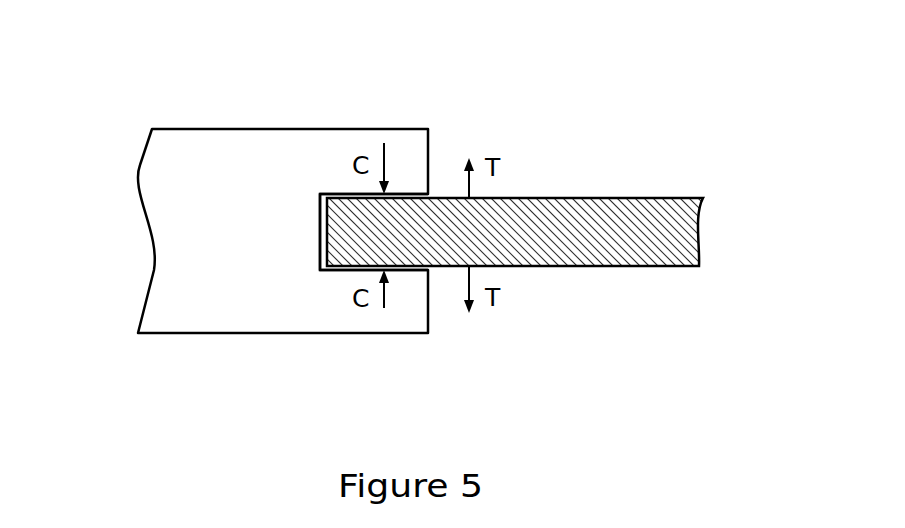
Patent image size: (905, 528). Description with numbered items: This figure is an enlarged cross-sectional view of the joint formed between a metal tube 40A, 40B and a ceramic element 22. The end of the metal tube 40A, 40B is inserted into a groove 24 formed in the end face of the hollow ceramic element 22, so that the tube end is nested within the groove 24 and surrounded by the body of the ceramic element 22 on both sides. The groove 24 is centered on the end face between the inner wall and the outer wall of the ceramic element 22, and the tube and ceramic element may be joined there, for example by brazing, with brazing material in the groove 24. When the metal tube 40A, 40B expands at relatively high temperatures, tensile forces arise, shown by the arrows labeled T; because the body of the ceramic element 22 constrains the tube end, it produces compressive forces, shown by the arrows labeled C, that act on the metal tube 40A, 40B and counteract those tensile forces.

The ceramic element 22 is at (210, 150).
The groove 24 is at (317, 264).
The metal tube 40A is at (511, 179).
The metal tube 40B is at (593, 213).